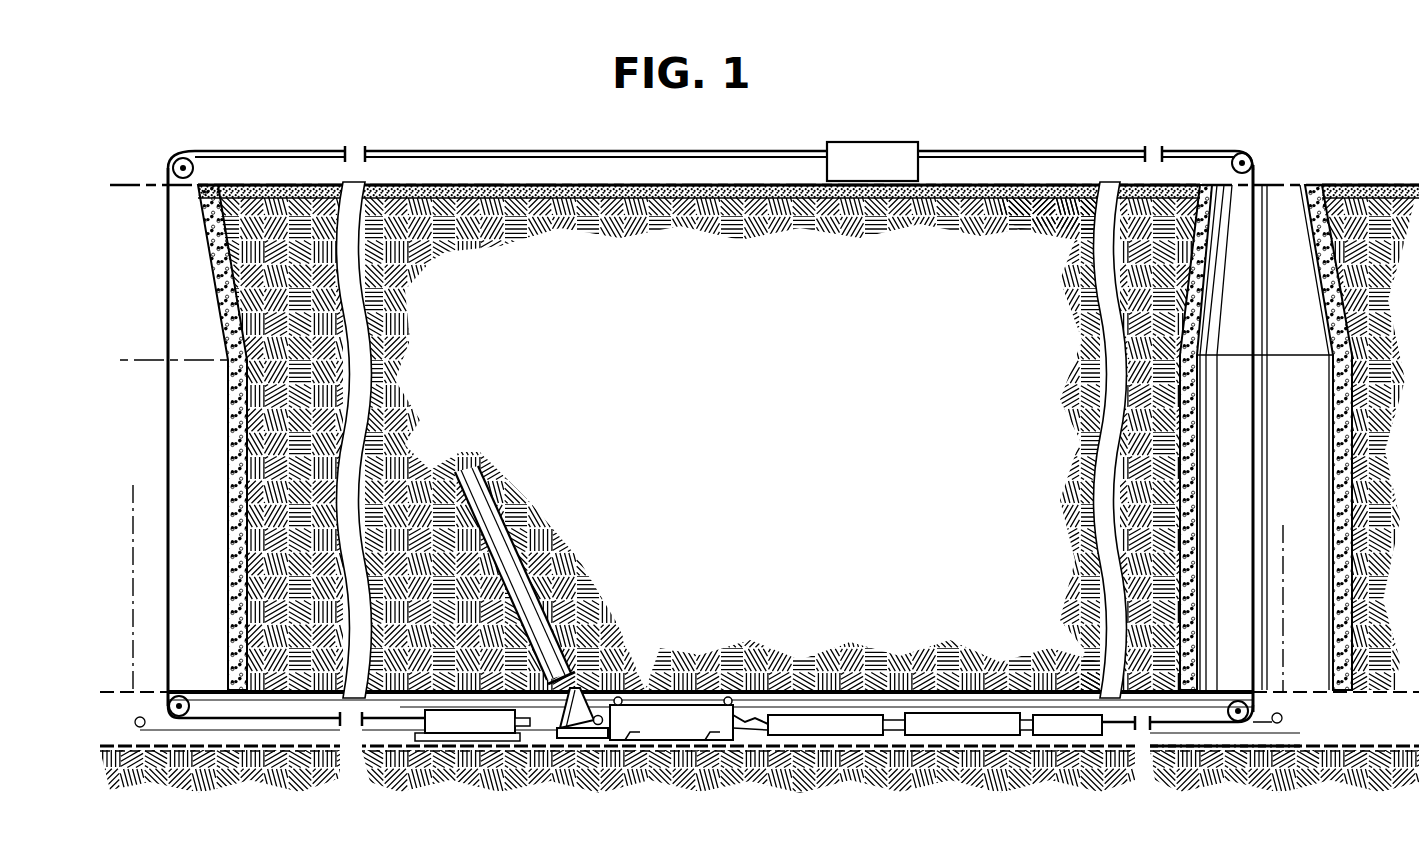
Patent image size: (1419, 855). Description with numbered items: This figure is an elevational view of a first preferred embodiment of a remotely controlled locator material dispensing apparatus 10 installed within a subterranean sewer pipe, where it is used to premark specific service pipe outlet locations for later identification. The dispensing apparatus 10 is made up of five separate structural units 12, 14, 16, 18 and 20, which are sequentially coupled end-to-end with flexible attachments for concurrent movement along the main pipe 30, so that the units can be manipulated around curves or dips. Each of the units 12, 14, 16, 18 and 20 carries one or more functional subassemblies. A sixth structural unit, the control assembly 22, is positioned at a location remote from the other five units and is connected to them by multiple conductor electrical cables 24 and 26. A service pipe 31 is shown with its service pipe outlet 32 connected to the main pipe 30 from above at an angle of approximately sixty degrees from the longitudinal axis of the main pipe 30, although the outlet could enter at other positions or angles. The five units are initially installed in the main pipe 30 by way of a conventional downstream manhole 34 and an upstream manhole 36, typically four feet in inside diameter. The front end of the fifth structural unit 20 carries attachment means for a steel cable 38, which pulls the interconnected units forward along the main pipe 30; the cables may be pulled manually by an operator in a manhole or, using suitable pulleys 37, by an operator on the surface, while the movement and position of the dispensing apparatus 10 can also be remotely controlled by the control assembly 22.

The remotely controlled locator material dispensing apparatus 10 is at (571, 602).
The first structural unit 12 is at (1050, 738).
The structural unit 14 is at (943, 738).
The structural unit 16 is at (802, 738).
The structural unit 18 is at (658, 738).
The fifth structural unit 20 is at (487, 727).
The control assembly 22 is at (862, 152).
The multiple conductor electrical cable 24 is at (1256, 458).
The multiple conductor electrical cable 26 is at (168, 470).
The main pipe 30 is at (1190, 734).
The service pipe 31 is at (518, 536).
The service pipe outlet 32 is at (590, 682).
The downstream manhole 34 is at (1306, 424).
The upstream manhole 36 is at (186, 528).
The pulleys 37 is at (135, 722).
The steel cable 38 is at (133, 615).